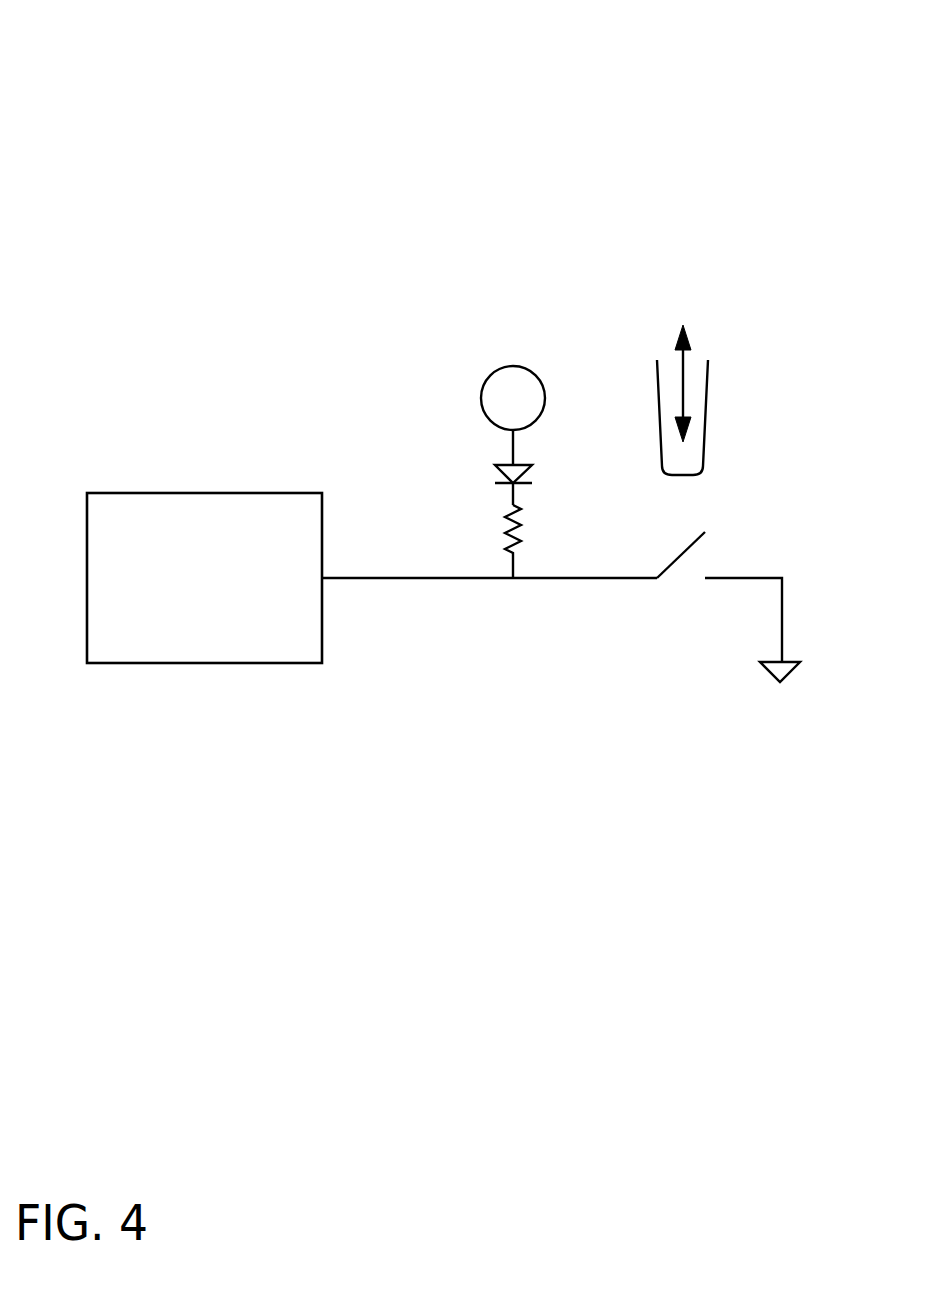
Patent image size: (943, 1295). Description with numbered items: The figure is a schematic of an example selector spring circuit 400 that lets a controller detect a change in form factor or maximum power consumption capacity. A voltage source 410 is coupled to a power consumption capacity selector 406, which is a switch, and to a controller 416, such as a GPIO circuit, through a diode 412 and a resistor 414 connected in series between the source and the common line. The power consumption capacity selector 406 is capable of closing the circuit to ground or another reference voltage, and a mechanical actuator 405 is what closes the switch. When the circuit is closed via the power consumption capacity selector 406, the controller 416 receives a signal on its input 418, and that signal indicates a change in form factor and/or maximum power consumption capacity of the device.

The selector spring circuit 400 is at (172, 88).
The mechanical actuator 405 is at (707, 415).
The power consumption capacity selector 406 is at (687, 618).
The voltage source 410 is at (492, 370).
The diode 412 is at (507, 468).
The resistor 414 is at (508, 530).
The controller 416 is at (184, 634).
The input 418 is at (323, 579).